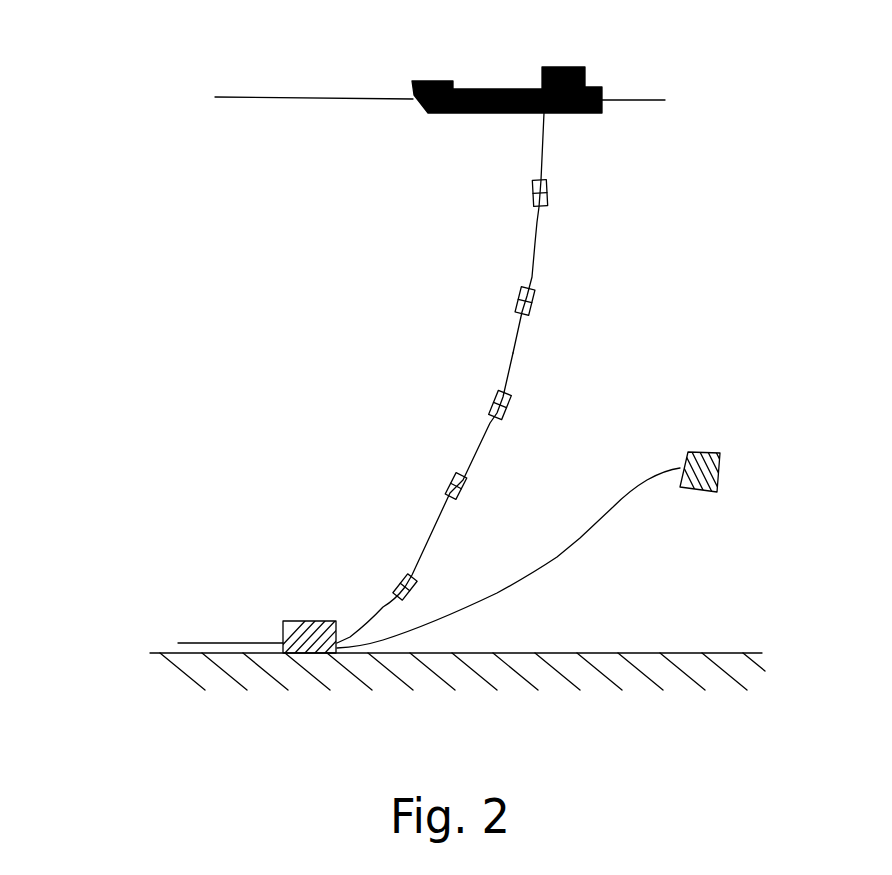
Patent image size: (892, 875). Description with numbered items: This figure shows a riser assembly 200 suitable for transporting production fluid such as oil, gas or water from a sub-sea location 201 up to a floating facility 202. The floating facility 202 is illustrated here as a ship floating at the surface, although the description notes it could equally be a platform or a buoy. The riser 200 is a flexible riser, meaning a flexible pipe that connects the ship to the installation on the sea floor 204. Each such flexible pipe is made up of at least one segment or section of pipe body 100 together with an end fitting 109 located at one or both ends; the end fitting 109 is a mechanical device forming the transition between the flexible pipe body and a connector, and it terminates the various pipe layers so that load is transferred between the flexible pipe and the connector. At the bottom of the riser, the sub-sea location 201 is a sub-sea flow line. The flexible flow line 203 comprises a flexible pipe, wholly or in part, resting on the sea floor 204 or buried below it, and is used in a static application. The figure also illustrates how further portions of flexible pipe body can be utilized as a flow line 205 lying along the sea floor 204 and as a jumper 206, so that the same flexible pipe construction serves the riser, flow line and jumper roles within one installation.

The pipe body 100 is at (535, 222).
The end fitting 109 is at (532, 193).
The riser assembly 200 is at (556, 327).
The sub-sea location 201 is at (288, 621).
The floating facility 202 is at (422, 82).
The flexible flow line 203 is at (432, 530).
The sea floor 204 is at (643, 653).
The flow line 205 is at (203, 642).
The jumper 206 is at (580, 538).